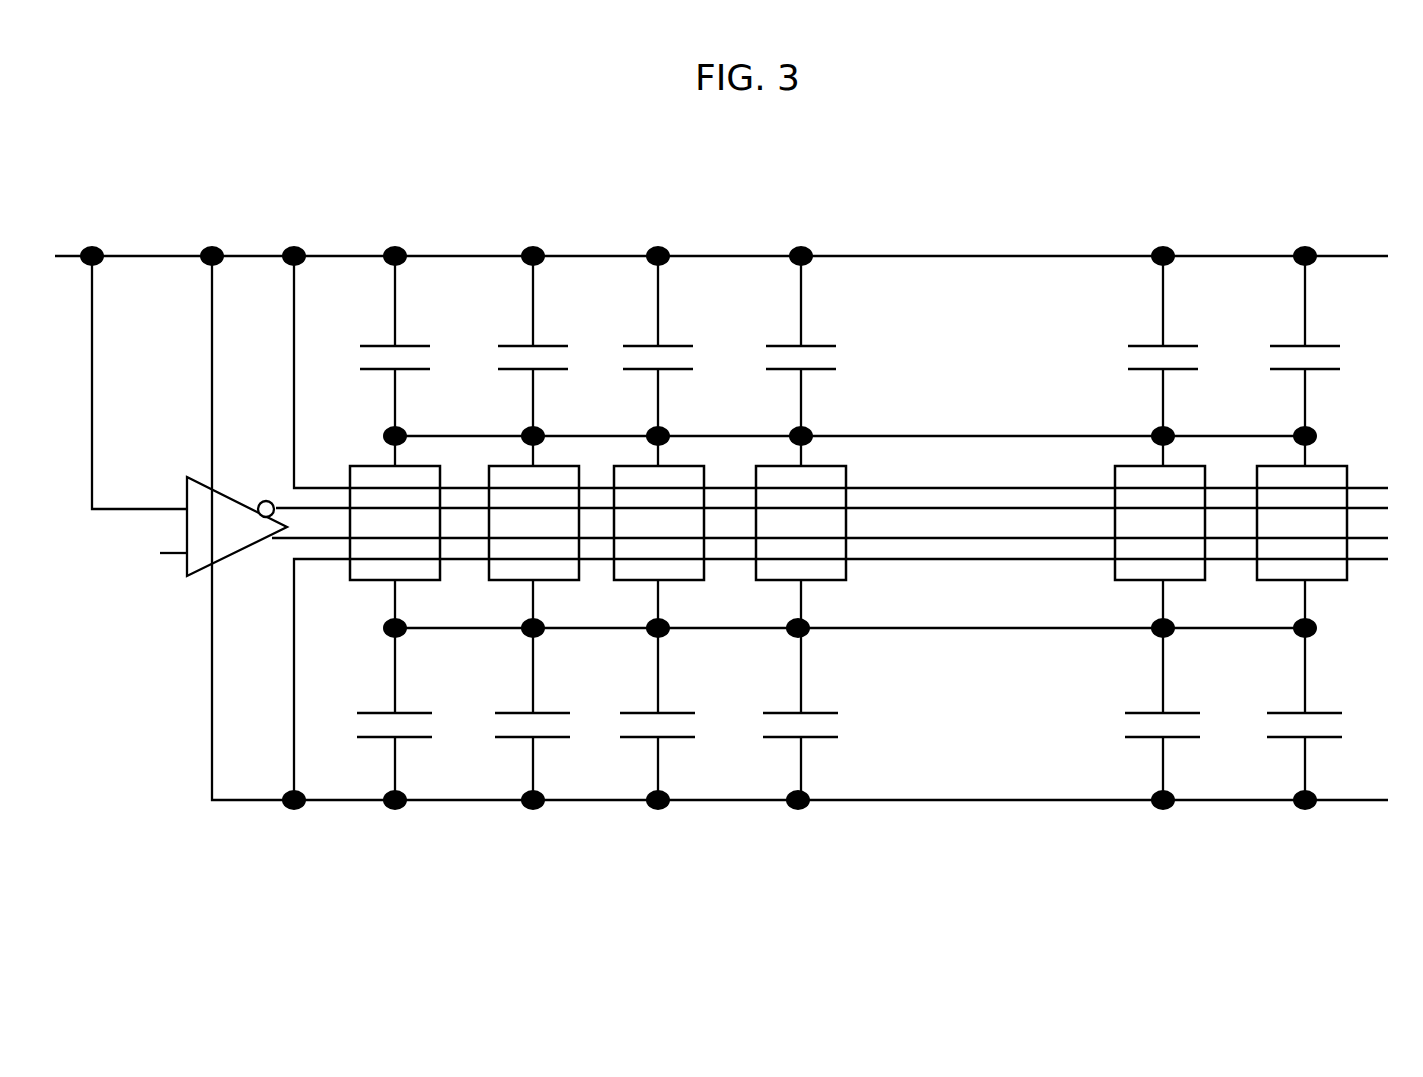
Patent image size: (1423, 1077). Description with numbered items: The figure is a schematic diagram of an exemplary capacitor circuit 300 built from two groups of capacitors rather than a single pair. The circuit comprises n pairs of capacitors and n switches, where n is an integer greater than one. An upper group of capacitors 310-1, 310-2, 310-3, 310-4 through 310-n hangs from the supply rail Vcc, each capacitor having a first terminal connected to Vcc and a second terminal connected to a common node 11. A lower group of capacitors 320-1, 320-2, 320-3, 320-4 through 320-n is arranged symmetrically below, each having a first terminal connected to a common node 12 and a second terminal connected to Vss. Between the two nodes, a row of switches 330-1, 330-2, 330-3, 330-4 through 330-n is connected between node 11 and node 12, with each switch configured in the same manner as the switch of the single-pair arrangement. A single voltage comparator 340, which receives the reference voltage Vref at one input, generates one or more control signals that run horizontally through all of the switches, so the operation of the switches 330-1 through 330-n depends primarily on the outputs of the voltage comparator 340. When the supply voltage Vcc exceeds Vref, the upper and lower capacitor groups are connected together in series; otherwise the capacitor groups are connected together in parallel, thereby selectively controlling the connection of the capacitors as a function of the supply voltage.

The capacitor circuit 300 is at (903, 208).
The node 11 is at (850, 426).
The node 12 is at (850, 618).
The voltage comparator 340 is at (245, 540).
The capacitor 310-1 is at (447, 343).
The capacitor 310-2 is at (585, 343).
The capacitor 310-3 is at (710, 343).
The capacitor 310-4 is at (853, 343).
The capacitor 310-n is at (1363, 340).
The capacitor 320-1 is at (447, 710).
The capacitor 320-2 is at (585, 710).
The capacitor 320-3 is at (710, 710).
The capacitor 320-4 is at (853, 710).
The capacitor 320-n is at (1363, 708).
The switch 330-1 is at (395, 523).
The switch 330-2 is at (534, 523).
The switch 330-3 is at (659, 523).
The switch 330-4 is at (801, 523).
The switch 330-n is at (1302, 523).